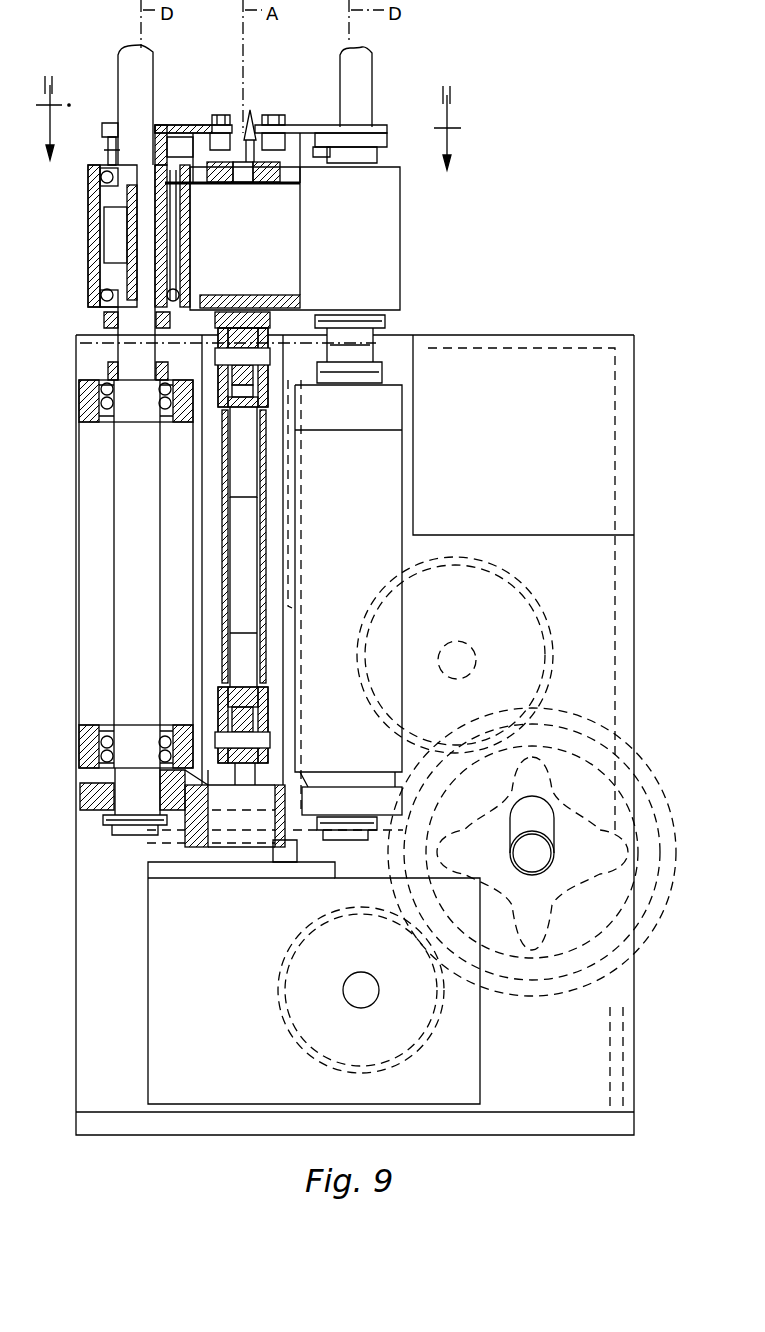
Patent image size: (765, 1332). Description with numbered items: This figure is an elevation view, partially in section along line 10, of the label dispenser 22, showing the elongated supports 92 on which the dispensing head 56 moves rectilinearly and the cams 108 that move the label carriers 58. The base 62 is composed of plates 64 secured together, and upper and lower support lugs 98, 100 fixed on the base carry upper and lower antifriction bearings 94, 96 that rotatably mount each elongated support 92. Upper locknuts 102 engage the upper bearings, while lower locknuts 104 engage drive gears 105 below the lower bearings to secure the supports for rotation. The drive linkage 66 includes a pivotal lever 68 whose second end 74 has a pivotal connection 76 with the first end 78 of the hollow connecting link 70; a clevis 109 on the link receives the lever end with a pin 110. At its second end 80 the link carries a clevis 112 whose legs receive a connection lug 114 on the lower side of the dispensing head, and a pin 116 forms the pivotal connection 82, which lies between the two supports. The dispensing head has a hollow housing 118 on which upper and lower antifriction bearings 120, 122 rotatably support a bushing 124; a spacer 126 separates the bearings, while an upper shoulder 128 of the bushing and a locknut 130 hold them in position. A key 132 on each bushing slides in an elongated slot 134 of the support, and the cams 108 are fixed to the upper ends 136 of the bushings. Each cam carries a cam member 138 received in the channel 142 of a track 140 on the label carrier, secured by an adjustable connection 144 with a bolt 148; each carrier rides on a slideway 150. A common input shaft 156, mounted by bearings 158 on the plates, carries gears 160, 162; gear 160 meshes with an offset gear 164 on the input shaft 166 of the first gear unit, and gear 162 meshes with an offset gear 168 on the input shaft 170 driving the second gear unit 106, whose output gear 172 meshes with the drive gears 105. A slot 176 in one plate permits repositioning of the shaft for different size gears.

The section line 10- 10 is at (248, 129).
The label dispenser 22 is at (514, 252).
The dispensing head 56 is at (407, 232).
The label carriers 58 is at (238, 185).
The base 62 is at (536, 335).
The plates 64 is at (530, 1136).
The drive linkage 66 is at (297, 797).
The pivotal lever 68 is at (249, 776).
The connecting link 70 is at (270, 548).
The second end of lever 74 is at (243, 770).
The pivotal connection 76 is at (269, 721).
The first end of link 78 is at (222, 665).
The second end of link 80 is at (262, 457).
The pivotal connection 82 is at (275, 353).
The elongated supports 92 is at (116, 344).
The upper antifriction bearings 94 is at (93, 400).
The lower antifriction bearings 96 is at (97, 758).
The upper support lugs 98 is at (83, 388).
The lower support lugs 100 is at (87, 727).
The upper locknuts 102 is at (113, 362).
The lower locknuts 104 is at (113, 825).
The drive gears 105 is at (80, 797).
The second gear unit 106 is at (146, 1041).
The cams 108 is at (163, 123).
The clevis 109 is at (290, 663).
The pin 110 is at (220, 728).
The clevis 112 is at (243, 422).
The connection lug 114 is at (243, 318).
The pin 116 is at (217, 353).
The hollow housing 118 is at (92, 239).
The upper antifriction bearing 120 is at (92, 212).
The lower antifriction bearing 122 is at (88, 303).
The bushing 124 is at (175, 252).
The spacer 126 is at (175, 279).
The upper shoulder 128 is at (98, 170).
The locknut 130 is at (108, 317).
The key 132 is at (110, 258).
The elongated slot 134 is at (111, 162).
The upper ends of bushings 136 is at (110, 123).
The cam member 138 is at (253, 95).
The track 140 is at (208, 185).
The channel 142 is at (185, 125).
The adjustable connection 144 is at (216, 114).
The bolt 148 is at (214, 133).
The slideway 150 is at (243, 185).
The shaft 156 is at (545, 855).
The bearings 158 is at (573, 888).
The gear 160 is at (500, 998).
The gear 162 is at (550, 1003).
The offset gear 164 is at (548, 623).
The input shaft 166 is at (460, 642).
The offset gear 168 is at (445, 1040).
The input shaft 170 is at (357, 1005).
The output gear 172 is at (194, 848).
The slot 176 is at (545, 800).